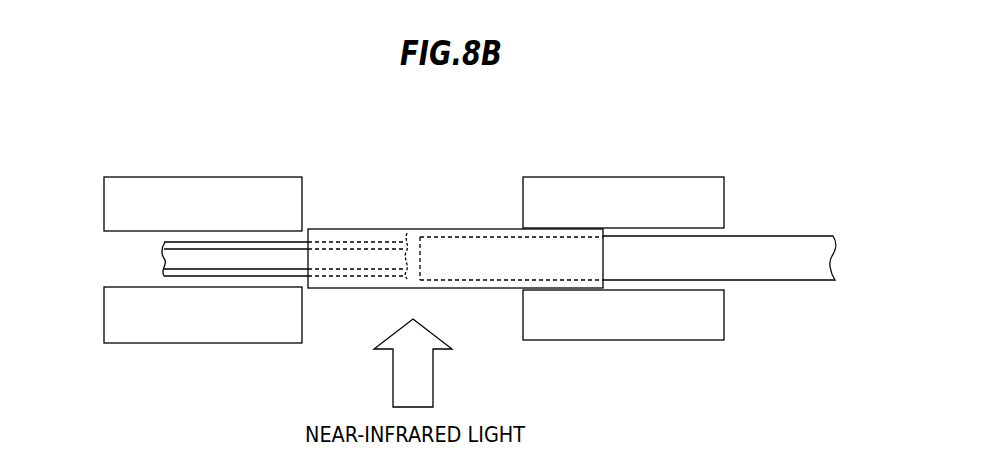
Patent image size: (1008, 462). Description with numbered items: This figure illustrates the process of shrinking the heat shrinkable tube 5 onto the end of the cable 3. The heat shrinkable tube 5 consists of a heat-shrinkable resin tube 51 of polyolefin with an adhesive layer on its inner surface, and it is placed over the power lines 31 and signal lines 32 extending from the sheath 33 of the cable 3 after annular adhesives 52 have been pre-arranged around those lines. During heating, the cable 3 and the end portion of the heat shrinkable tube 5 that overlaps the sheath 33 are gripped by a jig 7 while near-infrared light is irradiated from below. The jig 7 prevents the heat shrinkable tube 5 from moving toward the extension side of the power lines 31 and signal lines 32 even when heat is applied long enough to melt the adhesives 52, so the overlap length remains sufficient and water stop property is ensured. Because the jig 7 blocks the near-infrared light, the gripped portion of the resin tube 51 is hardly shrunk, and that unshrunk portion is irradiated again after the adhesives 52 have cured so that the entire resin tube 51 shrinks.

The cable 3 is at (649, 258).
The heat shrinkable tube 5 is at (410, 229).
The jig 7 is at (684, 305).
The power line 31 is at (225, 256).
The signal line 32 is at (237, 276).
The sheath 33 is at (765, 272).
The resin tube 51 is at (455, 292).
The annular adhesive 52 is at (415, 250).